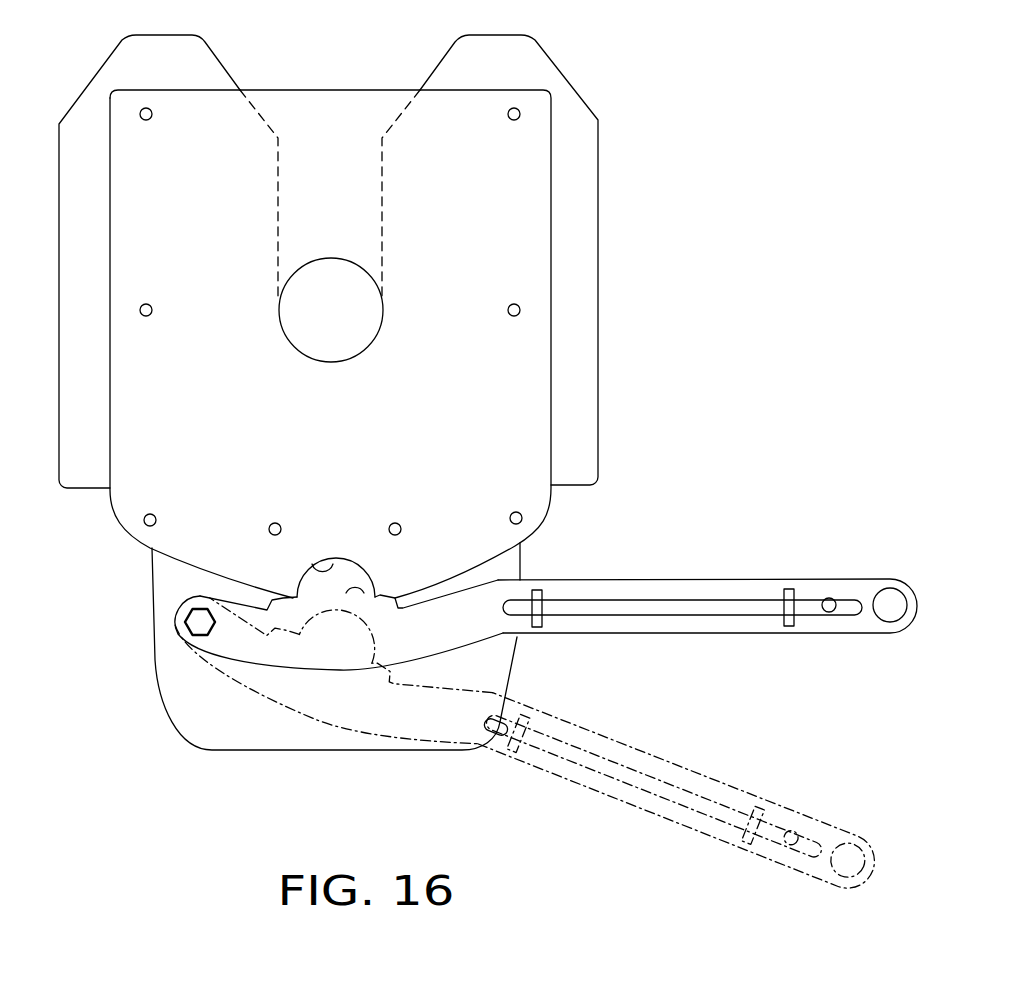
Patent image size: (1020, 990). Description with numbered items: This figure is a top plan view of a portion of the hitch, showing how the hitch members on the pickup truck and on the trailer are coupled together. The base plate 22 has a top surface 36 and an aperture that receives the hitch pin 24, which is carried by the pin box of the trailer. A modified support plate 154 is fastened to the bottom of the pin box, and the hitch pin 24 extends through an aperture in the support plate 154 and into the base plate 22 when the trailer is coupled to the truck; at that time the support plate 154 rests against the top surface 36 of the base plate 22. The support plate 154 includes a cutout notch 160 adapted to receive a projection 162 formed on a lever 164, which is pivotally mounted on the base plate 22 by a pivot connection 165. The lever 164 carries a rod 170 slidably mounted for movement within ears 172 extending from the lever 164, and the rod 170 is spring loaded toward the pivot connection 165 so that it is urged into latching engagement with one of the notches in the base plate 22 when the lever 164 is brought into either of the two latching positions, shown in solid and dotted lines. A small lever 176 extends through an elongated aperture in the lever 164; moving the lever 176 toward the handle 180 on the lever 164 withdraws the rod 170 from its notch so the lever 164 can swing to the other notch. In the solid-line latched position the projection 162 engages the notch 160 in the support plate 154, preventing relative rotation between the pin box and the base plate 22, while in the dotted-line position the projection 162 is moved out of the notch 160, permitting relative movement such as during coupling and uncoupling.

The base plate 22 is at (374, 308).
The hitch pin 24 is at (318, 323).
The top surface 36 is at (585, 188).
The support plate 154 is at (324, 102).
The cutout notch 160 is at (328, 565).
The projection 162 is at (345, 590).
The lever 164 is at (478, 644).
The pivot connection 165 is at (196, 622).
The rod 170 is at (618, 606).
The ears 172 is at (538, 588).
The lever 176 is at (829, 599).
The handle 180 is at (890, 612).